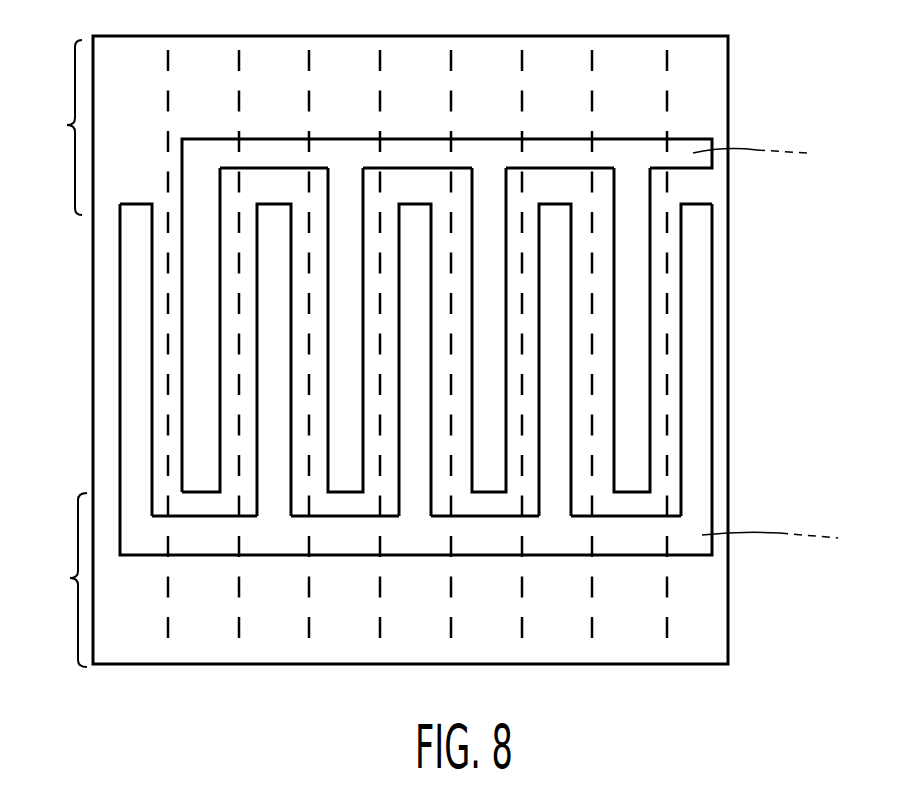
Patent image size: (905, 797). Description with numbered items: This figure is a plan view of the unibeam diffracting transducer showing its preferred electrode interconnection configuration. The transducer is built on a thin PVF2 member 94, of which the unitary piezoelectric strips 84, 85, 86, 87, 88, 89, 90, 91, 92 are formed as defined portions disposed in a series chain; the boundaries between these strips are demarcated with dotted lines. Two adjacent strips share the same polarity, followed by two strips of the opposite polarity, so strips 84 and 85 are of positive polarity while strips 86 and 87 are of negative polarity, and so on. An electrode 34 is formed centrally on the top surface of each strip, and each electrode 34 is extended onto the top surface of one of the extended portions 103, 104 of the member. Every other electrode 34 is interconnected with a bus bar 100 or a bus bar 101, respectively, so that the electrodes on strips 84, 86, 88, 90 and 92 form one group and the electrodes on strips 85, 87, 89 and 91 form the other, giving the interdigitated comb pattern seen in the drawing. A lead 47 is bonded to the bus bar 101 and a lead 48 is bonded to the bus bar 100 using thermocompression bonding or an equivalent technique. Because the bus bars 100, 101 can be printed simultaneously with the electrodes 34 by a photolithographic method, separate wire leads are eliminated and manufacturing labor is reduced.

The electrode 34 is at (197, 433).
The lead 47 is at (745, 150).
The lead 48 is at (747, 535).
The PVF2 member 94 is at (93, 293).
The bus bar 100 is at (402, 557).
The bus bar 101 is at (395, 138).
The extended portion 103 is at (62, 580).
The extended portion 104 is at (57, 127).
The piezoelectric strip 84 is at (706, 635).
The piezoelectric strip 85 is at (634, 635).
The piezoelectric strip 86 is at (566, 635).
The piezoelectric strip 87 is at (499, 635).
The piezoelectric strip 88 is at (431, 635).
The piezoelectric strip 89 is at (356, 635).
The piezoelectric strip 90 is at (287, 635).
The piezoelectric strip 91 is at (214, 635).
The piezoelectric strip 92 is at (144, 635).